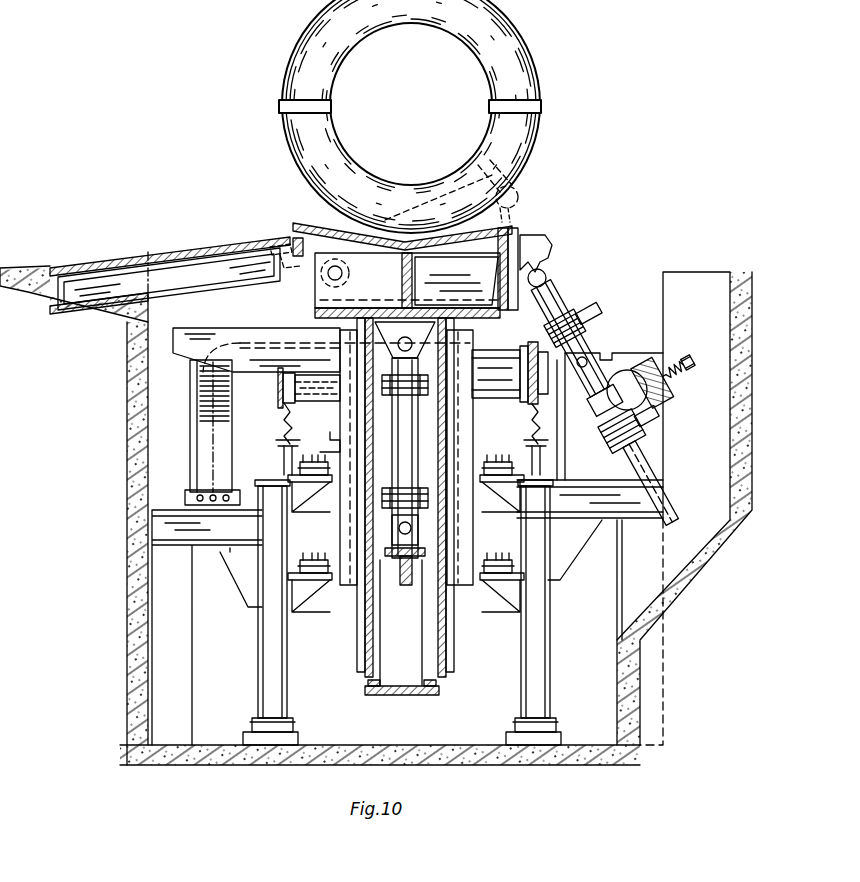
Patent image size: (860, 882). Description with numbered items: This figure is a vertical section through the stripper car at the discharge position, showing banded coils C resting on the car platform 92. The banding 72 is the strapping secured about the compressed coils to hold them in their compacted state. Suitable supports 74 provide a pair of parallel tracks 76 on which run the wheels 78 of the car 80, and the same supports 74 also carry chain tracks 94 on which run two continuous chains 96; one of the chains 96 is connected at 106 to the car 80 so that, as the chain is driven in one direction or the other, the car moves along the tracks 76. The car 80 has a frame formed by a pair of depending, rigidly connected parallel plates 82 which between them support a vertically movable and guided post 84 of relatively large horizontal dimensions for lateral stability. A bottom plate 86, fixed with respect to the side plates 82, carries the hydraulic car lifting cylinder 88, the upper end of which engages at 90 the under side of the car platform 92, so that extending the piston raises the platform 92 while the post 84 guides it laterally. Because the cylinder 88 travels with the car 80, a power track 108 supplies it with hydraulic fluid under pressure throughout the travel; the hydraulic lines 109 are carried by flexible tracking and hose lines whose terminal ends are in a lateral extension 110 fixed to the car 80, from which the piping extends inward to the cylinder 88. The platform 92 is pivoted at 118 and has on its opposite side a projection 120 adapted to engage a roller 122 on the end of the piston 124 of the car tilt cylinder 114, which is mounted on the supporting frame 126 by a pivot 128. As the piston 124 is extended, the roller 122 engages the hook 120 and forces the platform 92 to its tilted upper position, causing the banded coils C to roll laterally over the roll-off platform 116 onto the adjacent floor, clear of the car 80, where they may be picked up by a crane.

The coils C is at (532, 46).
The banding 72 is at (283, 100).
The supports 74 is at (258, 662).
The parallel tracks 76 is at (280, 410).
The wheels 78 is at (532, 346).
The car 80 is at (448, 264).
The parallel plates 82 is at (350, 590).
The post 84 is at (446, 648).
The bottom plate 86 is at (408, 696).
The hydraulic car lifting cylinder 88 is at (395, 412).
The engagement point 90 is at (396, 330).
The car platform 92 is at (470, 152).
The chain tracks 94 is at (322, 484).
The continuous chains 96 is at (308, 460).
The chain connection 106 is at (338, 458).
The power track 108 is at (197, 438).
The hydraulic lines 109 is at (200, 490).
The lateral extension 110 is at (232, 330).
The car tilt cylinder 114 is at (600, 390).
The roll-off platform 116 is at (92, 262).
The pivot 118 is at (325, 277).
The projection 120 is at (548, 246).
The roller 122 is at (548, 277).
The piston 124 is at (562, 300).
The supporting frame 126 is at (650, 370).
The pivot 128 is at (588, 358).